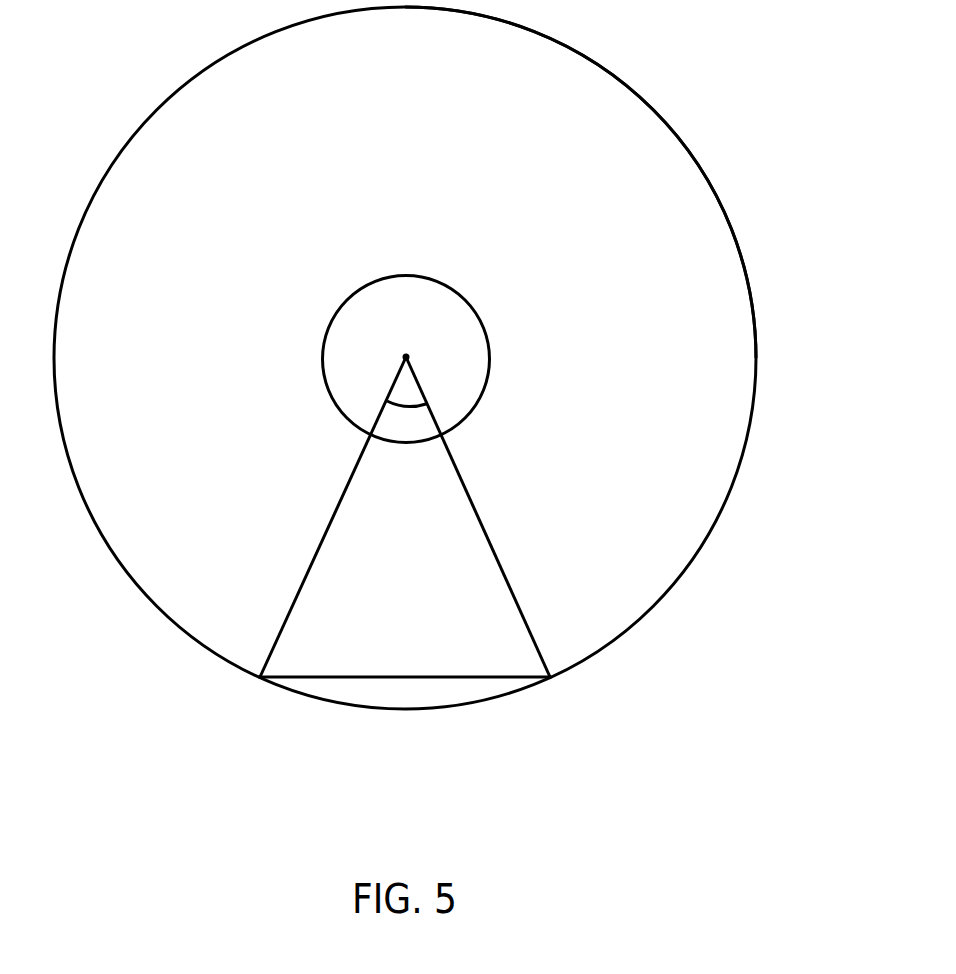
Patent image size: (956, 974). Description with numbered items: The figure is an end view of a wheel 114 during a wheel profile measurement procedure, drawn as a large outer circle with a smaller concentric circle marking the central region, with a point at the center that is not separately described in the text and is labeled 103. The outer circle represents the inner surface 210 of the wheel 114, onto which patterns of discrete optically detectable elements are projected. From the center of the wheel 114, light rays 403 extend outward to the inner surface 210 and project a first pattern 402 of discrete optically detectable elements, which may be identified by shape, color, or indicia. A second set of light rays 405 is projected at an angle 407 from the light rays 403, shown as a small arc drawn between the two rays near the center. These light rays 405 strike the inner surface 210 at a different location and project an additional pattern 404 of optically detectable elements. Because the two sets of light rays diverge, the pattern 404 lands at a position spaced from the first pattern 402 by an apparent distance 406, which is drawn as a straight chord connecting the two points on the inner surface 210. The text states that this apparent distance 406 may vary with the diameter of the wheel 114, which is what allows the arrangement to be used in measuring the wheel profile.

The wheel 114 is at (652, 108).
The inner surface 210 is at (747, 278).
The center of disk 103 is at (406, 357).
The light rays 403 is at (338, 503).
The light rays 405 is at (482, 517).
The apparent distance 406 is at (352, 677).
The pattern 402 is at (260, 678).
The additional pattern 404 is at (551, 678).
The angle 407 is at (407, 412).